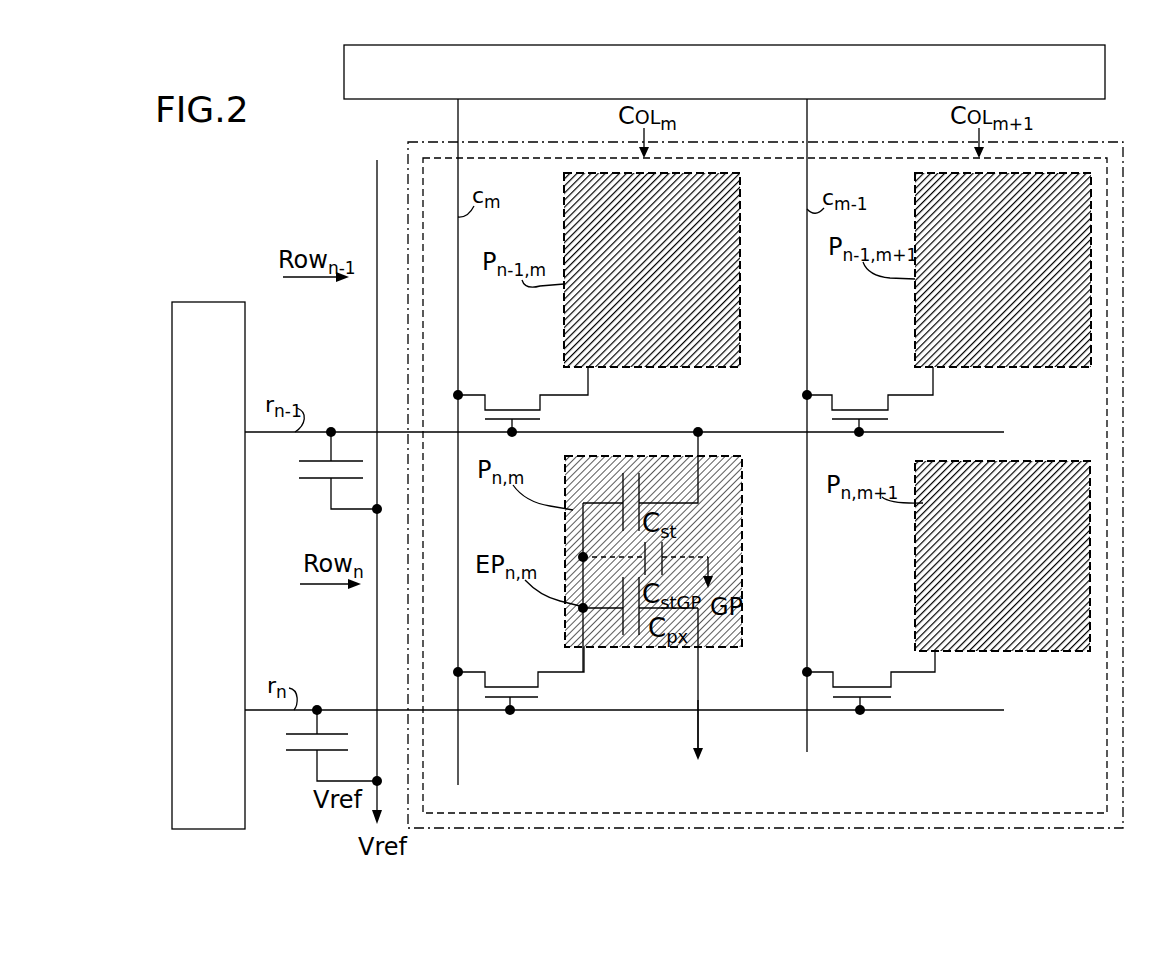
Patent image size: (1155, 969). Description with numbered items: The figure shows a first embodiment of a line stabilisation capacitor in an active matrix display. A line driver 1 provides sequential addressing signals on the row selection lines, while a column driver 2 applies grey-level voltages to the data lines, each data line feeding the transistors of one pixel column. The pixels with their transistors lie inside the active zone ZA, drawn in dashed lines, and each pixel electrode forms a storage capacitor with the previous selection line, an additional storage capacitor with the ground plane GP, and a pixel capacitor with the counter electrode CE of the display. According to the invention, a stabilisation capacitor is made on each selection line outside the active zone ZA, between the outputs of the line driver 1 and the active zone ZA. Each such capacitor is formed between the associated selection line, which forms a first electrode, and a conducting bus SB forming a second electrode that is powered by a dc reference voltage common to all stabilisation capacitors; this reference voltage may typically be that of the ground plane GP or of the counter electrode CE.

The line driver 1 is at (229, 330).
The column driver 2 is at (358, 67).
The conducting bus SB is at (377, 176).
The active zone ZA is at (527, 828).
The ground plane GP is at (768, 812).
The counter electrode CE is at (693, 749).